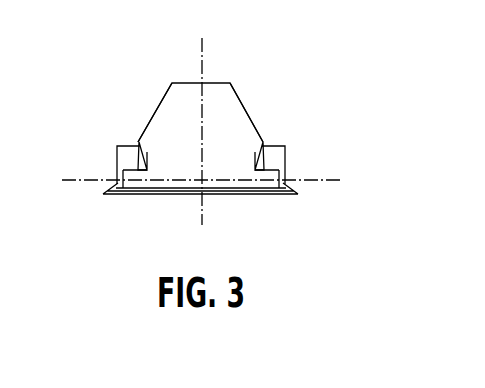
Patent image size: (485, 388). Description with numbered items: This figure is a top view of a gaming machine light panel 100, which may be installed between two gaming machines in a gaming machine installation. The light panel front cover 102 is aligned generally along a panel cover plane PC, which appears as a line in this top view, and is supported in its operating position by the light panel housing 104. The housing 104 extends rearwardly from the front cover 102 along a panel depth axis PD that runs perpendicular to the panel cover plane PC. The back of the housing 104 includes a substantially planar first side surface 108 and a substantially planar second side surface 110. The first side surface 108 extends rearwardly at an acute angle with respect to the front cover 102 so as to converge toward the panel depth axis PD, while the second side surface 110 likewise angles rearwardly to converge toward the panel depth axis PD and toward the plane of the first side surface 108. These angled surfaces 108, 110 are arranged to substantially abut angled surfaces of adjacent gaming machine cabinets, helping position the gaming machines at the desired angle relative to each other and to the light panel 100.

The gaming machine light panel 100 is at (331, 41).
The light panel front cover 102 is at (148, 197).
The light panel housing 104 is at (157, 135).
The first side surface 108 is at (243, 100).
The second side surface 110 is at (163, 98).
The panel depth axis PD is at (200, 52).
The panel cover plane PC is at (319, 181).